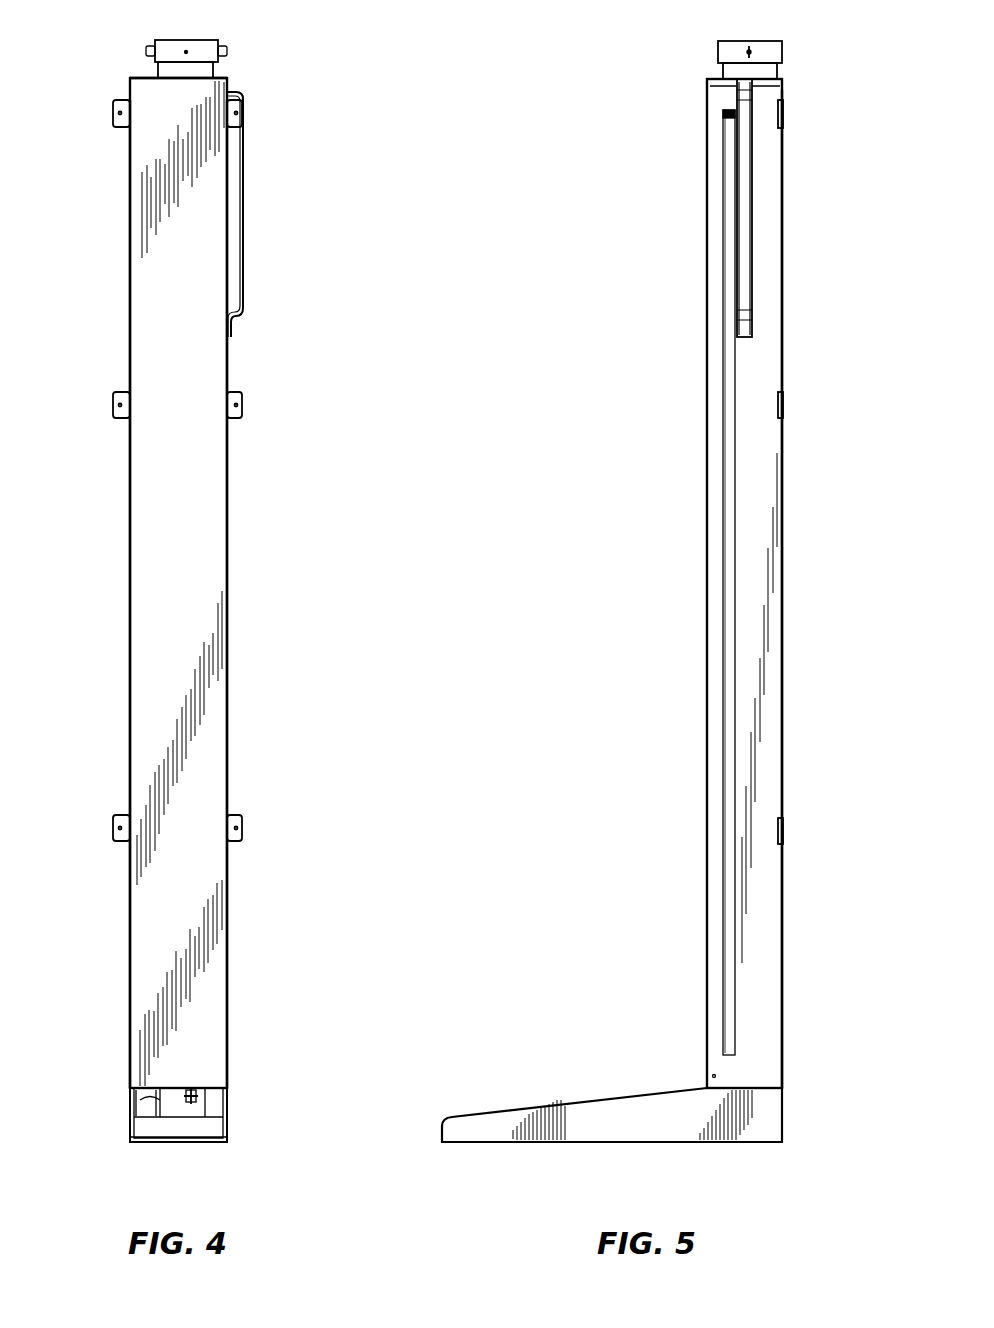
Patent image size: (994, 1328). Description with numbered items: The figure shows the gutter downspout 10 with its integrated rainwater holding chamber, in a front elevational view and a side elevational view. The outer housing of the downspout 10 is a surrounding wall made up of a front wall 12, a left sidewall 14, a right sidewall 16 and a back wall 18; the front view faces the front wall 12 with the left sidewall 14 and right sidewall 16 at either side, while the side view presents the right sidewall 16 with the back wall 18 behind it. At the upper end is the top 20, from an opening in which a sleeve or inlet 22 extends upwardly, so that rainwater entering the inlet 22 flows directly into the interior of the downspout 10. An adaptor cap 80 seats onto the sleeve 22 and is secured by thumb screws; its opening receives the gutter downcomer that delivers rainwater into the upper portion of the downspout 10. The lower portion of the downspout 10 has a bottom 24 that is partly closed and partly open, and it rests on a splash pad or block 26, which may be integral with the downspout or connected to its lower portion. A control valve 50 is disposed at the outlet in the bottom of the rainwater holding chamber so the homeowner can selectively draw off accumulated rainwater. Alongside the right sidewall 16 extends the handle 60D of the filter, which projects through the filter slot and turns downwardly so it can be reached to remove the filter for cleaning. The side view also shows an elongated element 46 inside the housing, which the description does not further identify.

In FIG. 4, the gutter downspout 10 is at (68, 325).
In FIG. 5, the gutter downspout 10 is at (620, 535).
In FIG. 4, the front wall 12 is at (188, 509).
In FIG. 4, the left sidewall 14 is at (130, 535).
In FIG. 4, the right sidewall 16 is at (227, 532).
In FIG. 5, the right sidewall 16 is at (755, 502).
In FIG. 5, the back wall 18 is at (782, 550).
In FIG. 4, the top 20 is at (143, 78).
In FIG. 4, the sleeve or inlet 22 is at (202, 72).
In FIG. 5, the sleeve or inlet 22 is at (767, 71).
In FIG. 4, the bottom 24 is at (138, 1094).
In FIG. 4, the splash pad or block 26 is at (162, 1127).
In FIG. 5, the splash pad or block 26 is at (642, 1117).
In FIG. 5, the tube 46 is at (730, 752).
In FIG. 4, the control valve 50 is at (197, 1100).
In FIG. 4, the handle 60D is at (242, 231).
In FIG. 5, the handle 60D is at (752, 229).
In FIG. 4, the adaptor cap 80 is at (202, 50).
In FIG. 5, the adaptor cap 80 is at (765, 52).